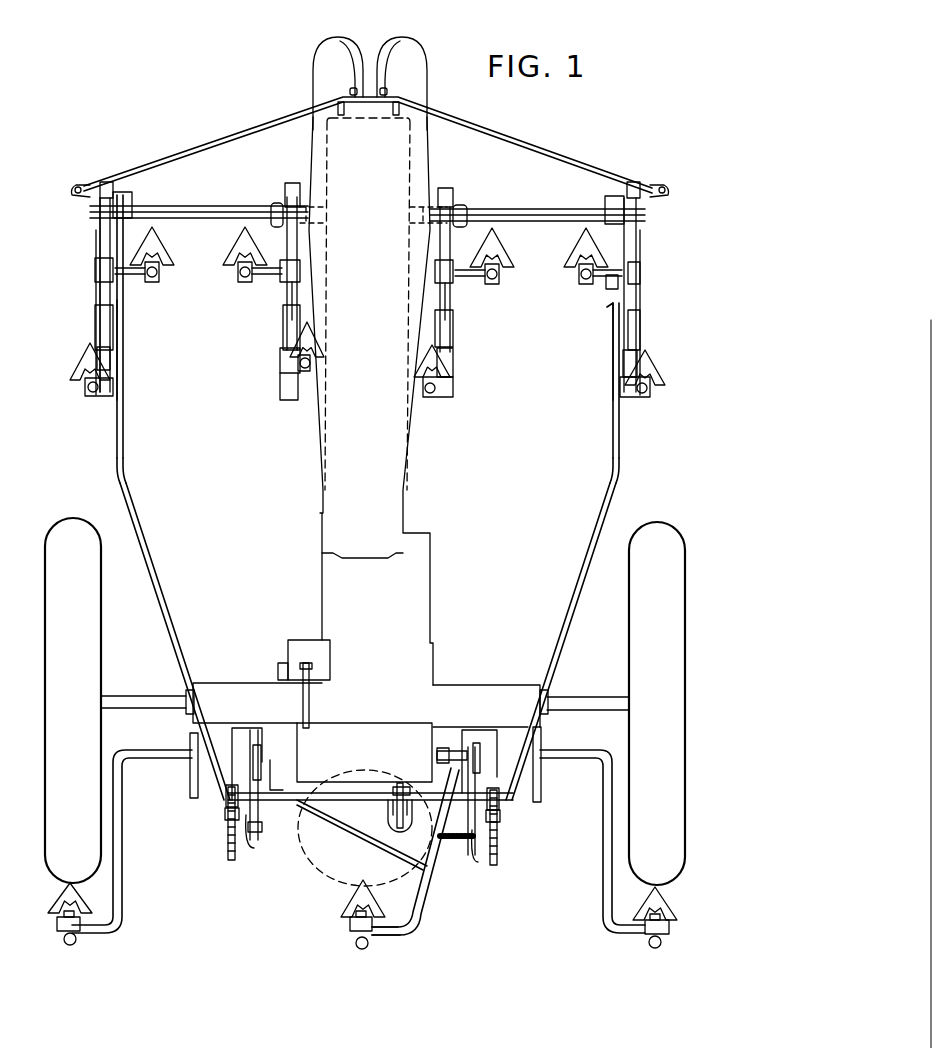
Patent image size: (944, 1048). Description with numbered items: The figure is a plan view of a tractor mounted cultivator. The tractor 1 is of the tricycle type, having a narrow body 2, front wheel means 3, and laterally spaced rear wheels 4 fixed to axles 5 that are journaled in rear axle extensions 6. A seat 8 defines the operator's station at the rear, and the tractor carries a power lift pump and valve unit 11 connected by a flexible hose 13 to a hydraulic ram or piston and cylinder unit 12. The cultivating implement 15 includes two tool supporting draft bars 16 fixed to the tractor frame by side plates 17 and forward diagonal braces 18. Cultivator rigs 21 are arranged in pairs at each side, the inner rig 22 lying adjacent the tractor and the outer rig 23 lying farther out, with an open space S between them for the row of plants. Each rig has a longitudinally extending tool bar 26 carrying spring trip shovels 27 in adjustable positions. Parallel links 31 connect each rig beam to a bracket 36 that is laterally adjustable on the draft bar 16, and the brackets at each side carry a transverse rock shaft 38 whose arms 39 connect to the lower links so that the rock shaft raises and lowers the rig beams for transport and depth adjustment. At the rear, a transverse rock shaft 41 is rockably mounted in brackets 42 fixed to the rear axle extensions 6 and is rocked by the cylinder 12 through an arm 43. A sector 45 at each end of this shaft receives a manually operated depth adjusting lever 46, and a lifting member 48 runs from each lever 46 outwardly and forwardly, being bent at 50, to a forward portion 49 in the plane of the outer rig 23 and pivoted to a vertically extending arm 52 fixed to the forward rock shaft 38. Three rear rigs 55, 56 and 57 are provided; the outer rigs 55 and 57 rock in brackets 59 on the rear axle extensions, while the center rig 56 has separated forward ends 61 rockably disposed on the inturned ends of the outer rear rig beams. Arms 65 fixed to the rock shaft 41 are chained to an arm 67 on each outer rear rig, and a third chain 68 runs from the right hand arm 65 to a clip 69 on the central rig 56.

The tractor 1 is at (305, 446).
The narrow body 2 is at (395, 518).
The front wheel means 3 is at (388, 48).
The rear wheels 4 is at (92, 624).
The axles 5 is at (133, 698).
The rear axle extensions 6 is at (228, 685).
The seat 8 is at (322, 879).
The power lift pump and valve unit 11 is at (300, 648).
The hydraulic ram or piston and cylinder unit 12 is at (384, 817).
The flexible hose 13 is at (382, 790).
The cultivating implement 15 is at (58, 317).
The tool supporting draft bars 16 is at (205, 206).
The side plates 17 is at (312, 197).
The forward diagonal braces 18 is at (246, 128).
The cultivator rigs 21 is at (272, 374).
The laterally inner cultivator rig 22 is at (280, 305).
The laterally outer rig 23 is at (98, 287).
The tool bar 26 is at (98, 238).
The spring trip shovels 27 is at (237, 247).
The parallel link 31 is at (108, 299).
The bracket 36 is at (118, 184).
The transverse rock shaft 38 is at (182, 208).
The arms 39 is at (272, 224).
The transverse rock shaft 41 is at (322, 803).
The brackets 42 is at (243, 738).
The arm 43 is at (408, 790).
The sector 45 is at (228, 851).
The depth adjusting lever 46 is at (226, 816).
The lifting member 48 is at (174, 607).
The forward portion 49 is at (122, 325).
The bend 50 is at (118, 474).
The vertically extending arm 52 is at (134, 208).
The rear rig 55 is at (98, 934).
The center rig 56 is at (398, 937).
The rear rig 57 is at (627, 935).
The brackets 59 is at (190, 741).
The forward ends 61 is at (272, 776).
The arms 65 is at (250, 843).
The arm 67 is at (262, 833).
The third chain 68 is at (430, 870).
The clip 69 is at (405, 861).
The open space S is at (178, 388).